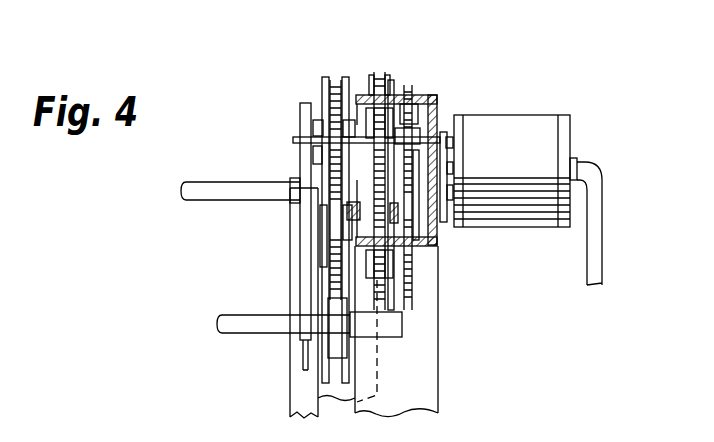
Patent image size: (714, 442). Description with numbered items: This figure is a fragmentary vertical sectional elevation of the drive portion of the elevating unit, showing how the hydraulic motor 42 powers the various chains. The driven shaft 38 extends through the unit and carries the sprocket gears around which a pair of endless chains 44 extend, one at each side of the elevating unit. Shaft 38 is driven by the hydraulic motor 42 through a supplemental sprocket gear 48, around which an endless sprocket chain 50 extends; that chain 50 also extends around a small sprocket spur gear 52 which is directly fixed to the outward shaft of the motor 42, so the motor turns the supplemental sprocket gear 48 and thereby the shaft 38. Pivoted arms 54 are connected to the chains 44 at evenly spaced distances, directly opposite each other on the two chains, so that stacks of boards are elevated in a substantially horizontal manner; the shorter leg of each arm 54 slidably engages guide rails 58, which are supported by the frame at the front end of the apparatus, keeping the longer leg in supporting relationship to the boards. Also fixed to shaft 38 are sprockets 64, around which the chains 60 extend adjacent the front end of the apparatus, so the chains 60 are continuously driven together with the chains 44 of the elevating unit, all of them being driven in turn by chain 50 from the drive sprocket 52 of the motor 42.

The shaft 38 is at (212, 182).
The hydraulic motor 42 is at (520, 117).
The endless chains 44 is at (323, 95).
The supplemental sprocket gear 48 is at (322, 127).
The endless sprocket chain 50 is at (428, 292).
The sprocket spur gear 52 is at (437, 256).
The pivoted arms 54 is at (300, 245).
The rails 58 is at (290, 401).
The chains 60 is at (392, 77).
The sprockets 64 is at (447, 168).